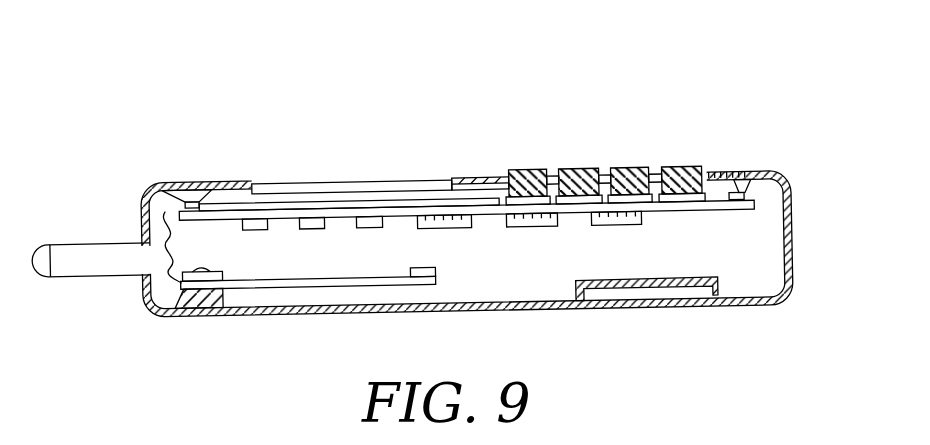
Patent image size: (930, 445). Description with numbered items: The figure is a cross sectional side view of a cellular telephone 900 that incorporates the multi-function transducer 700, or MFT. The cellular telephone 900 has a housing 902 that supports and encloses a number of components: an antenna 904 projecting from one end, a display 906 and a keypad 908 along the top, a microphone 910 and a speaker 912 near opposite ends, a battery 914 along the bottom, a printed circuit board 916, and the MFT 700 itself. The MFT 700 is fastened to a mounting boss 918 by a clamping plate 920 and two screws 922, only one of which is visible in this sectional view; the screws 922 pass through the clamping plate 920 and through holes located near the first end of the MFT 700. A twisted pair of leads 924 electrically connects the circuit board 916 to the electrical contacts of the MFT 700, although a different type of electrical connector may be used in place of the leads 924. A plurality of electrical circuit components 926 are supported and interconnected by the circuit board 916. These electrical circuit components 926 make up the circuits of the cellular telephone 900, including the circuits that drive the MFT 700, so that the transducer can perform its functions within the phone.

The cellular telephone 900 is at (757, 329).
The housing 902 is at (477, 184).
The antenna 904 is at (63, 277).
The display 906 is at (403, 186).
The keypad 908 is at (627, 177).
The microphone 910 is at (745, 182).
The speaker 912 is at (152, 191).
The battery 914 is at (645, 303).
The printed circuit board 916 is at (289, 211).
The mounting boss 918 is at (195, 318).
The clamping plate 920 is at (223, 278).
The screws 922 is at (199, 268).
The twisted pair of leads 924 is at (165, 234).
The electrical circuit components 926 is at (312, 232).
The multi-function transducer 700 is at (437, 284).